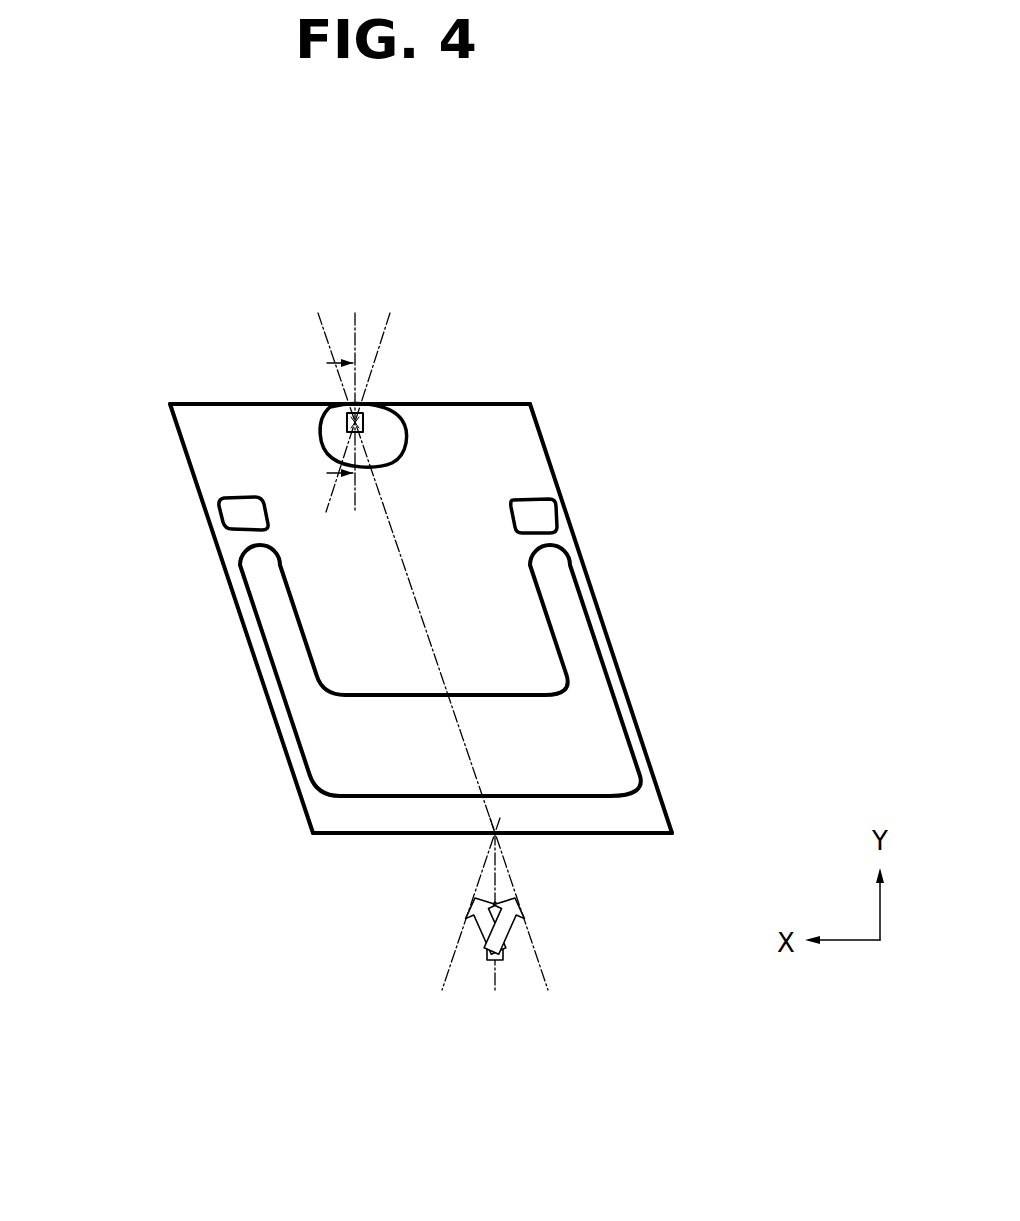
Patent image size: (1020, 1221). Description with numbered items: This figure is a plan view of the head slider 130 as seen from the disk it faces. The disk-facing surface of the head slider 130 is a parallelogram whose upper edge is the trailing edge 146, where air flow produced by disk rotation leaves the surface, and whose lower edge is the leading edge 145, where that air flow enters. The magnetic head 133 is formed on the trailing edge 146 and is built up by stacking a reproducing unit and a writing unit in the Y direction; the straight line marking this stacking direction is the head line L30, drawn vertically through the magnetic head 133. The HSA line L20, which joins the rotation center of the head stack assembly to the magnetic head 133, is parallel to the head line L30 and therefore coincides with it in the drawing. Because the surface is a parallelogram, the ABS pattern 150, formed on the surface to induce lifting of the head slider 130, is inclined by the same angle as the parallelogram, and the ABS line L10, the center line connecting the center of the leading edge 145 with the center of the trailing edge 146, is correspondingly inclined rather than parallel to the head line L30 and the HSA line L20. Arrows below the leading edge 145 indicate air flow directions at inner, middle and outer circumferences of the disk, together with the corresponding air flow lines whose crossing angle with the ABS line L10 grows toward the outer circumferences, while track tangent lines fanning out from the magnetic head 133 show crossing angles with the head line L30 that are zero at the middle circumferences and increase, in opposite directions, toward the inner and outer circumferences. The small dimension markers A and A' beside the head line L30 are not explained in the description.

The head slider 130 is at (137, 391).
The trailing edge 146 is at (228, 403).
The leading edge 145 is at (641, 841).
The air bearing surface (ABS) pattern 150 is at (397, 440).
The magnetic head 133 is at (366, 420).
The ABS line L10 is at (320, 546).
The HSA line L20 is at (362, 363).
The head line L30 is at (362, 363).
The offset A is at (329, 361).
The offset A' is at (327, 473).